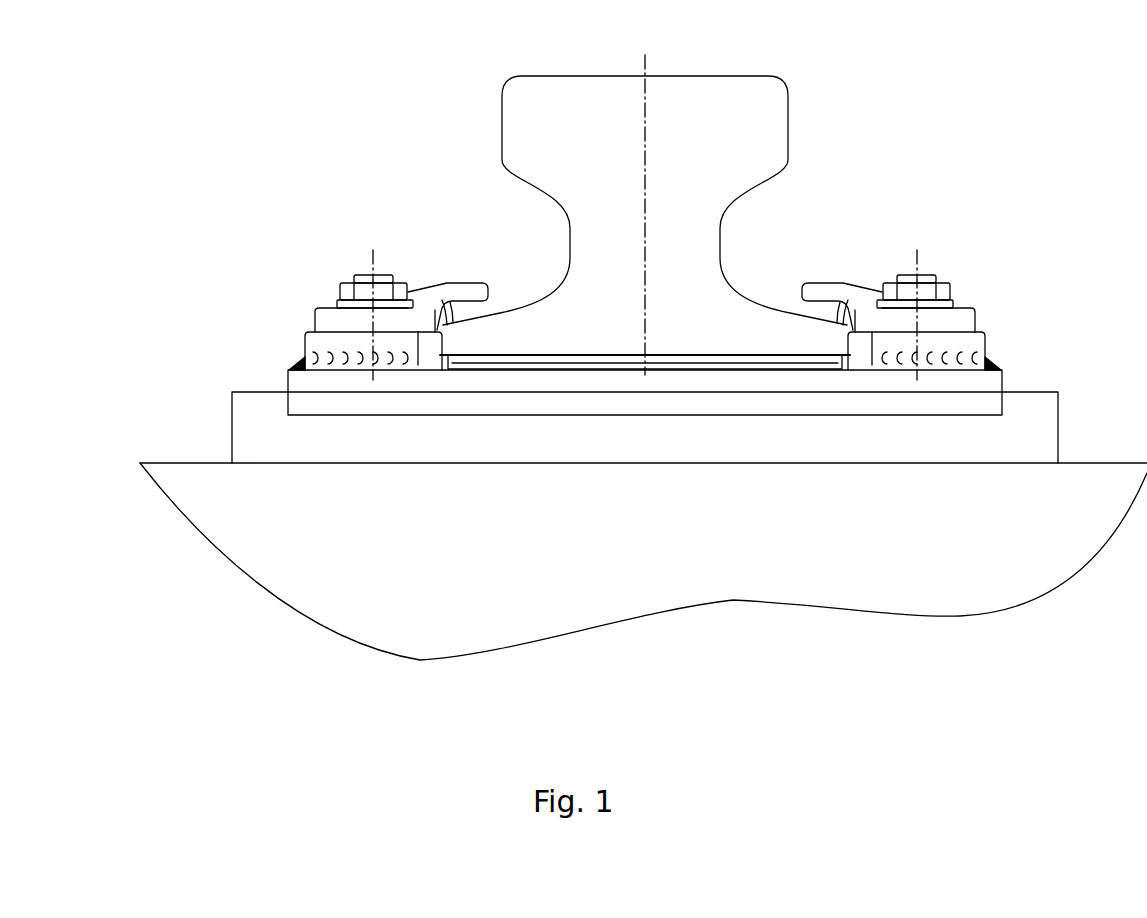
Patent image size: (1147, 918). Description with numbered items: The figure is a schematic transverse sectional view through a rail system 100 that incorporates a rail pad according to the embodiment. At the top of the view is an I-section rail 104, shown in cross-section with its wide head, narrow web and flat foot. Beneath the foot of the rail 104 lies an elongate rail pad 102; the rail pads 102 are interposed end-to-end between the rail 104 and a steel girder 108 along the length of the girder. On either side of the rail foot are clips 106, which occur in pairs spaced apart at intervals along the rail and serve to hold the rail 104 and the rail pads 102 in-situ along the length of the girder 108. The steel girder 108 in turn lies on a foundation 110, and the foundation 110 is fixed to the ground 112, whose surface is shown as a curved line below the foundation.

The rail system 100 is at (616, 370).
The rail pad 102 is at (773, 357).
The I-section rail 104 is at (723, 117).
The clips 106 is at (975, 300).
The steel girder 108 is at (318, 390).
The foundation 110 is at (395, 457).
The ground 112 is at (713, 565).